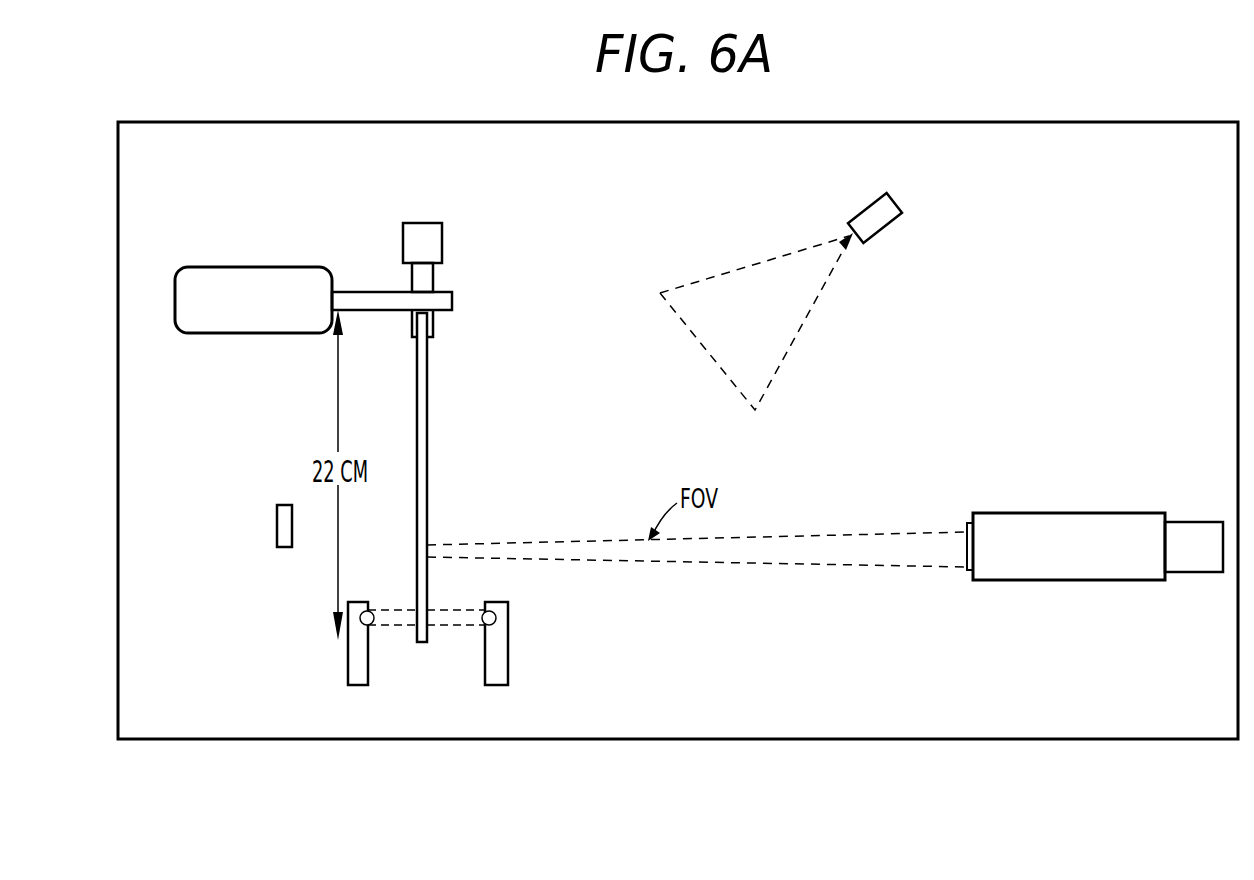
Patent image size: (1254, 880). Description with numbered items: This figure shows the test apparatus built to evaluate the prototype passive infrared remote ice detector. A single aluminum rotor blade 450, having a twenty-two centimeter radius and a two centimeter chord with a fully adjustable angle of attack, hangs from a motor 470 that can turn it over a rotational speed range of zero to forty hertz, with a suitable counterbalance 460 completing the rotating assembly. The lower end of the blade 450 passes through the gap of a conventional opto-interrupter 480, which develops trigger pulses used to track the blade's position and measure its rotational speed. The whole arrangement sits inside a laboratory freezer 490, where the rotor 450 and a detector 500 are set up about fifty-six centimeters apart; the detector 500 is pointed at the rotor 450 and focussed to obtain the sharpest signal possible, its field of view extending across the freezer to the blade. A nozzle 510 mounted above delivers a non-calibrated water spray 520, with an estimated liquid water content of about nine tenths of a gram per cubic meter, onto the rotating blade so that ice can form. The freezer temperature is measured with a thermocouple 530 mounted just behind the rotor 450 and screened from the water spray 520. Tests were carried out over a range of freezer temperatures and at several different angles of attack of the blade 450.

The rotor blade 450 is at (428, 423).
The counterbalance 460 is at (442, 241).
The motor 470 is at (253, 267).
The opto-interrupter 480 is at (372, 624).
The laboratory freezer 490 is at (846, 750).
The detector 500 is at (1068, 581).
The nozzle 510 is at (903, 213).
The water spray 520 is at (801, 329).
The thermocouple 530 is at (284, 548).